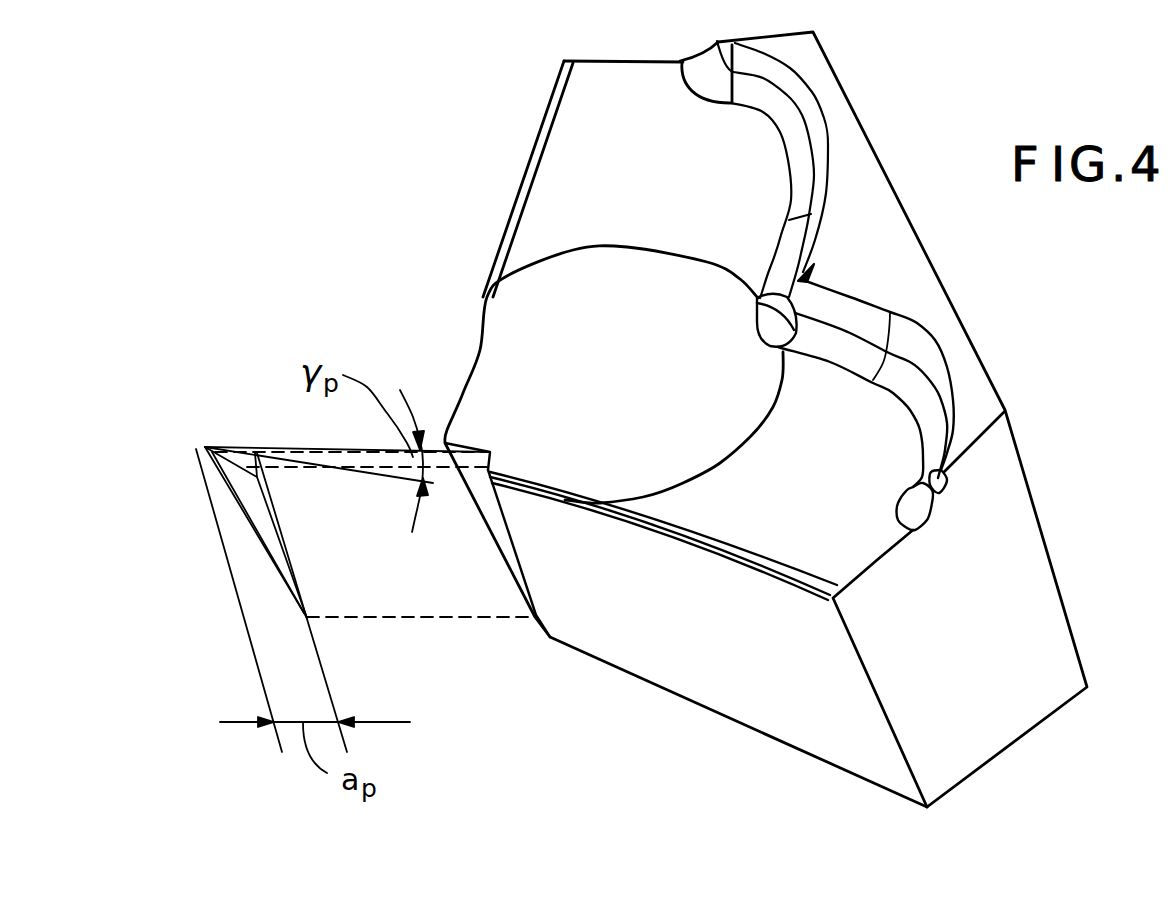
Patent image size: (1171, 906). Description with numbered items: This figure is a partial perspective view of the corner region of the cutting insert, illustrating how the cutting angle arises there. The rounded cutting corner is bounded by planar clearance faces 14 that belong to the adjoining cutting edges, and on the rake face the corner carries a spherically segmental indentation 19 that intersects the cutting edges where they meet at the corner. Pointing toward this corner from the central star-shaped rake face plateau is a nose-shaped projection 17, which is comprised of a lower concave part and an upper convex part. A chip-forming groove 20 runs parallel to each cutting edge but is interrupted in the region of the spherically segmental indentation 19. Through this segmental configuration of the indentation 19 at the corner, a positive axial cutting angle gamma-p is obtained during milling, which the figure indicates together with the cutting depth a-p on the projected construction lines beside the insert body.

The planar clearance face 14 is at (732, 640).
The nose-shaped projection 17 is at (753, 339).
The spherically segmental indentation 19 is at (642, 413).
The chip-forming groove 20 is at (675, 183).